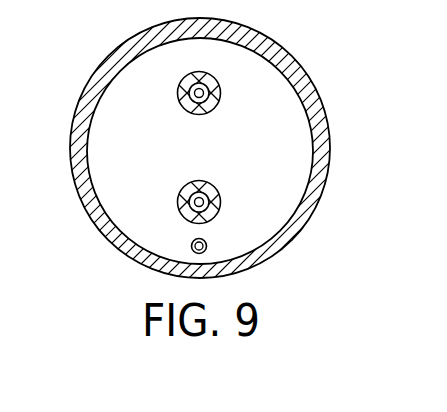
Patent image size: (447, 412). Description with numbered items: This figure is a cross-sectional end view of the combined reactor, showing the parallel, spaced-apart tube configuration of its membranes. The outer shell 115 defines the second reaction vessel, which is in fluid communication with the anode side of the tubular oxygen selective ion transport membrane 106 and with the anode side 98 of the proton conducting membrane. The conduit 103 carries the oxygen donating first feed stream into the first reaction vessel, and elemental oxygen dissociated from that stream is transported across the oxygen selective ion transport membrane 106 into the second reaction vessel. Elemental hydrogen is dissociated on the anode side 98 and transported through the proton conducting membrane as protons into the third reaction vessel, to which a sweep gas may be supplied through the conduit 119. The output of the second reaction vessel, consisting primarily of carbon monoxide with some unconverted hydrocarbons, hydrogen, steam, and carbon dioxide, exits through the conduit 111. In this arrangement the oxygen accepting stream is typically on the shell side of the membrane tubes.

The outer shell 115 is at (262, 43).
The oxygen selective ion transport membrane 106 is at (248, 100).
The conduit 103 is at (213, 107).
The anode side 98 is at (207, 181).
The conduit 119 is at (204, 204).
The conduit 111 is at (191, 242).